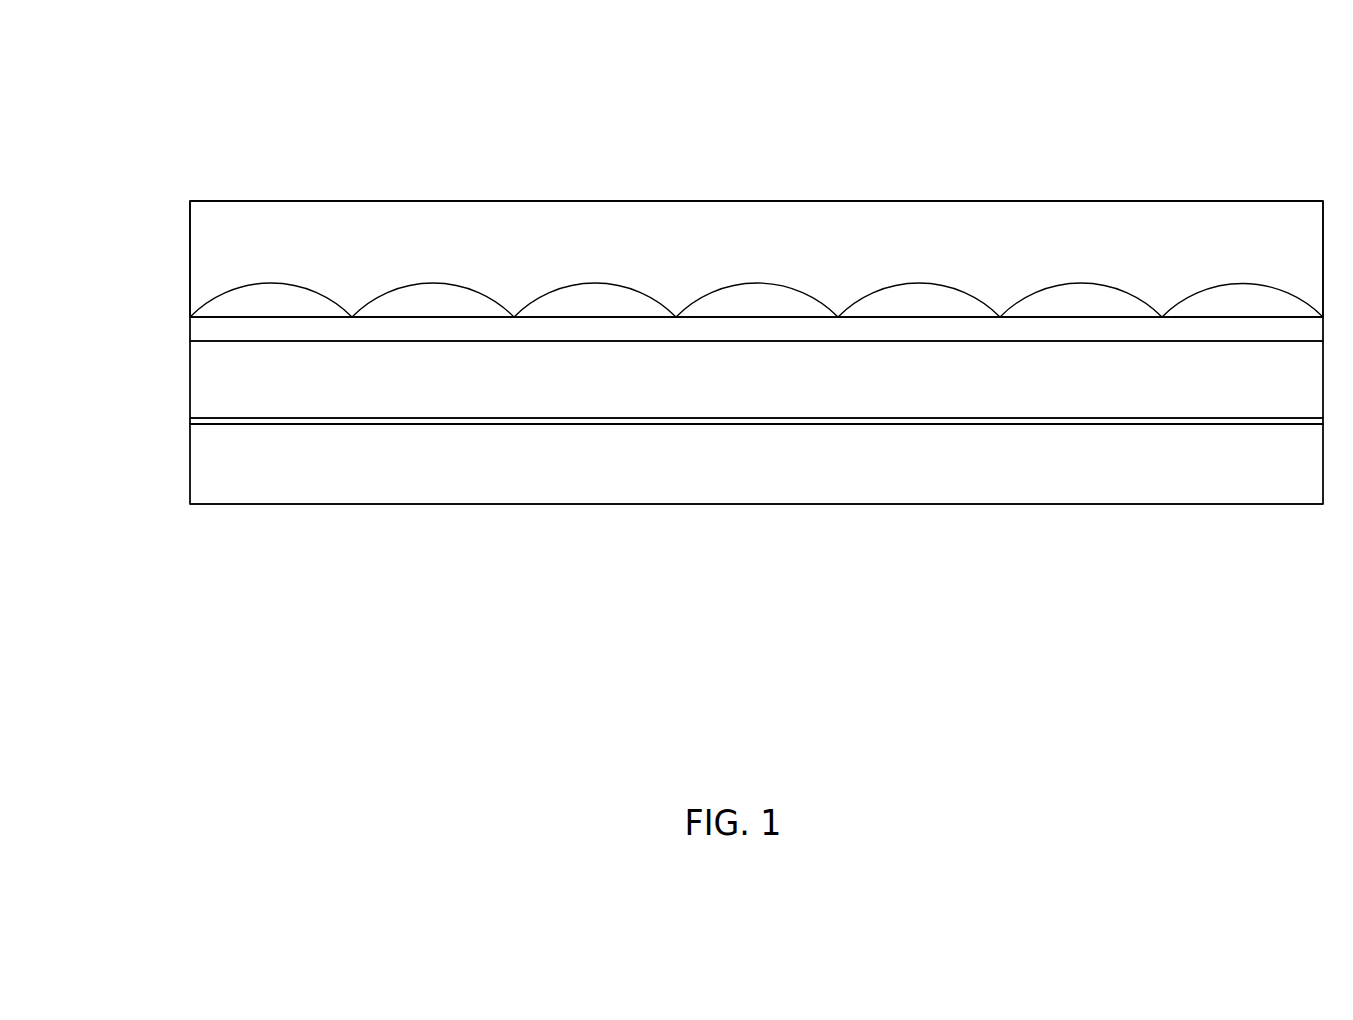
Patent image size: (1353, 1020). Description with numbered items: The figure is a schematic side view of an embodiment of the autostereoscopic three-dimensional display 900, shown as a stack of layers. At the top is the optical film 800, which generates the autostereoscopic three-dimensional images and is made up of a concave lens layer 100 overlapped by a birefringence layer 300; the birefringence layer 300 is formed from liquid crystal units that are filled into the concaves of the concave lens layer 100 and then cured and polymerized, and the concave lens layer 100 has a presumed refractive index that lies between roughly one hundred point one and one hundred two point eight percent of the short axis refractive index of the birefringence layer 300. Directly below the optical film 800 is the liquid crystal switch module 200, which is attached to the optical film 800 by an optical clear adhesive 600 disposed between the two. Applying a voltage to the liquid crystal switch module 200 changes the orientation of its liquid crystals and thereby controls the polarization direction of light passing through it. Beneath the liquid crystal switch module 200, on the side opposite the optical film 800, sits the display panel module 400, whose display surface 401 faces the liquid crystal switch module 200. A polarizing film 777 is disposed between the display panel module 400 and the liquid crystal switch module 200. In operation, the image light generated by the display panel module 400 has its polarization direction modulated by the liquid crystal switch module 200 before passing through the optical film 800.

The autostereoscopic 3D display 900 is at (177, 108).
The concave lens layer 100 is at (1233, 233).
The birefringence layer 300 is at (1283, 286).
The optical film 800 is at (185, 194).
The optical clear adhesive 600 is at (212, 325).
The liquid crystal switch module 200 is at (210, 362).
The polarizing film 777 is at (210, 418).
The display panel module 400 is at (210, 463).
The display surface 401 is at (310, 425).